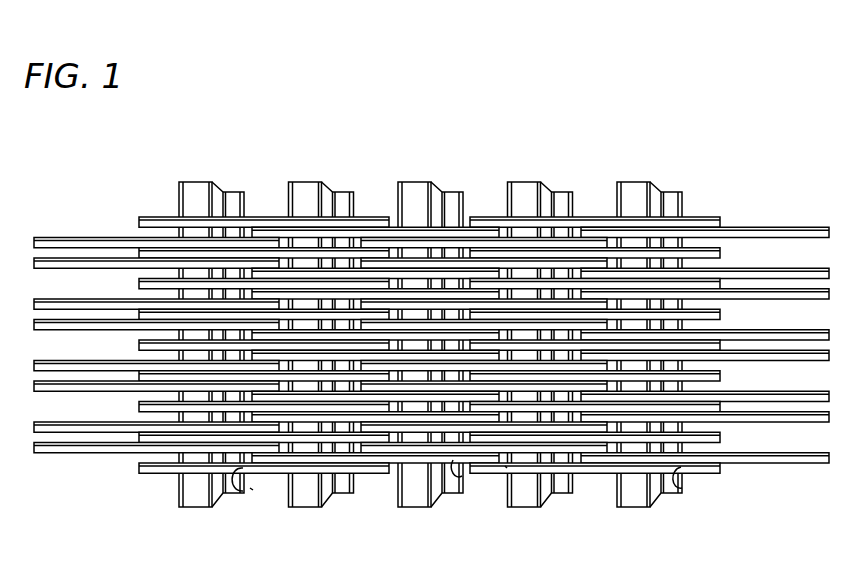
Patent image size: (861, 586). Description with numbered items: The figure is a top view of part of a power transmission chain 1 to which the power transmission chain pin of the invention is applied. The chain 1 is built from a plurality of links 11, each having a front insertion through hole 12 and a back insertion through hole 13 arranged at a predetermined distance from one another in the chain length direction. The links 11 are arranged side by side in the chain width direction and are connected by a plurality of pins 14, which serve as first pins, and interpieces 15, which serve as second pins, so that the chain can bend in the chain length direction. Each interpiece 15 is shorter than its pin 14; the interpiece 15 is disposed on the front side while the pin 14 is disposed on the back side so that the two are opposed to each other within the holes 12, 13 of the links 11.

The power transmission chain 1 is at (431, 350).
The link 11 is at (157, 473).
The front insertion through hole 12 is at (453, 462).
The back insertion through hole 13 is at (250, 488).
The pin 14 is at (199, 490).
The interpiece 15 is at (240, 493).